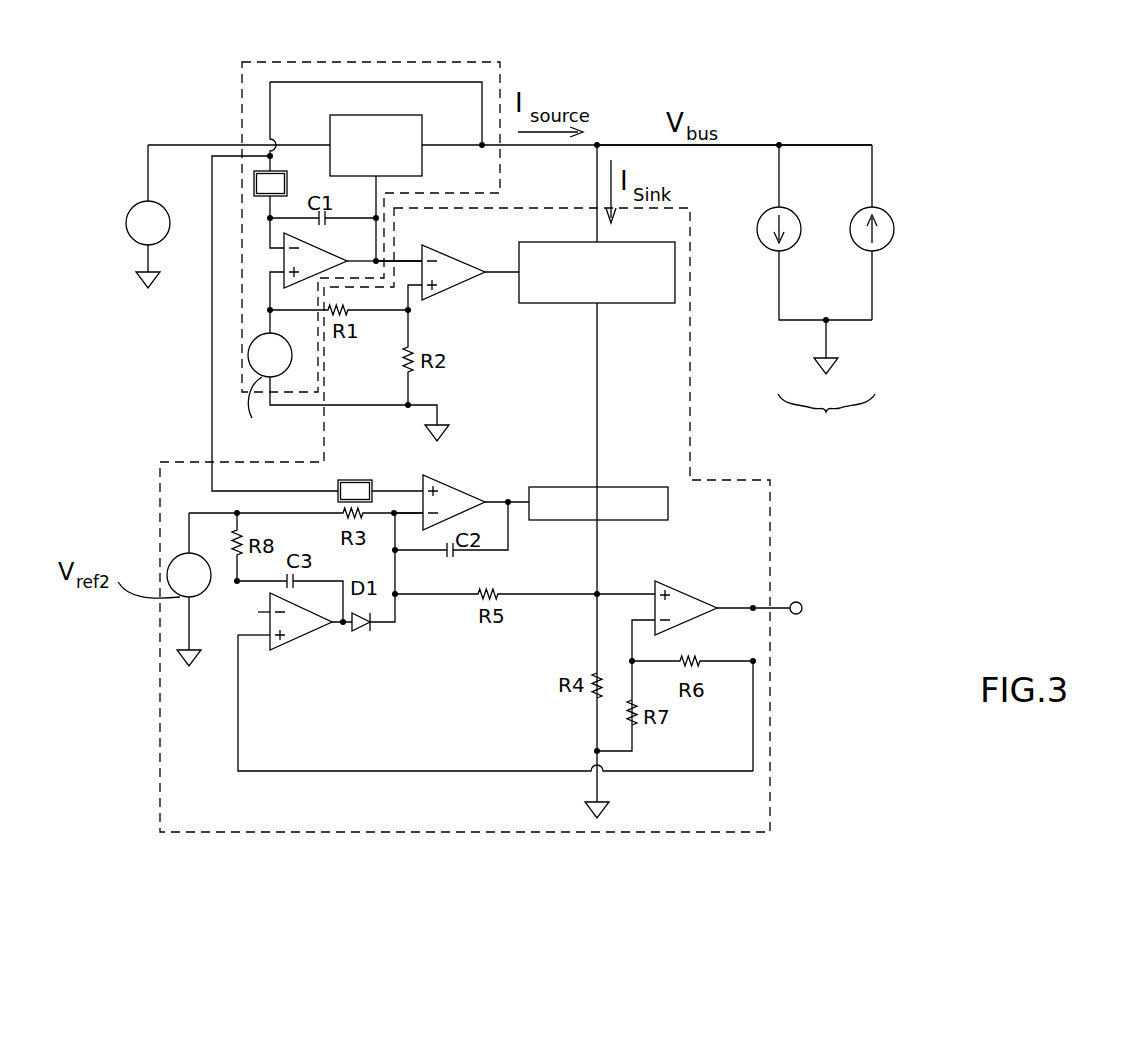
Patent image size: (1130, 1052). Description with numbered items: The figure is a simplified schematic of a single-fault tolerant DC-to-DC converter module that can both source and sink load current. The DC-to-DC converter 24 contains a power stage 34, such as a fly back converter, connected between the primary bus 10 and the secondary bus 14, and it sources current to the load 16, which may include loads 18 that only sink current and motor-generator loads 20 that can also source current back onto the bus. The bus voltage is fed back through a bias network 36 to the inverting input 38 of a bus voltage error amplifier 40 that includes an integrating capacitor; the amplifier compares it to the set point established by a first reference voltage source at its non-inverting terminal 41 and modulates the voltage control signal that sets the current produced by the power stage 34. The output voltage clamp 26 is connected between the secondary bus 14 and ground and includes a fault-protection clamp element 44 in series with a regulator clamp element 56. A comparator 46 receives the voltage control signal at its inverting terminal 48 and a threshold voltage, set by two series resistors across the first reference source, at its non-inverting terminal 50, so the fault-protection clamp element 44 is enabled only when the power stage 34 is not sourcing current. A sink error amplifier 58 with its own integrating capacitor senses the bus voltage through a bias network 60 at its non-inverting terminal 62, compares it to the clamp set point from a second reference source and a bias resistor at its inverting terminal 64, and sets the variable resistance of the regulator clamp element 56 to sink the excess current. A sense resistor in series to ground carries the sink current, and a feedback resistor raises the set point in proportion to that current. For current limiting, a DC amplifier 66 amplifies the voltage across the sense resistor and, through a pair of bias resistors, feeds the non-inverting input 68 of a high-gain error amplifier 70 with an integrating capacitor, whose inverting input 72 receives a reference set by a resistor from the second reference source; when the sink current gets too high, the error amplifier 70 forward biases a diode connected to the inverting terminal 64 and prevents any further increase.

The primary bus 10 is at (170, 145).
The secondary bus 14 is at (755, 146).
The load 16 is at (826, 380).
The loads 18 is at (763, 250).
The motor-generator loads 20 is at (892, 213).
The DC-to-DC converter 24 is at (304, 62).
The output voltage clamp 26 is at (182, 462).
The power stage 34 is at (376, 115).
The bias network 36 is at (288, 185).
The inverting input 38 is at (270, 235).
The bus voltage error amplifier 40 is at (318, 250).
The non-inverting terminal 41 is at (270, 282).
The fault-protection clamp element 44 is at (628, 303).
The comparator 46 is at (456, 256).
The inverting terminal 48 is at (424, 259).
The non-inverting terminal 50 is at (414, 295).
The regulator clamp element 56 is at (640, 520).
The sink error amplifier 58 is at (462, 490).
The bias network 60 is at (348, 480).
The non-inverting terminal 62 is at (420, 485).
The inverting terminal 64 is at (420, 513).
The DC amplifier 66 is at (690, 592).
The non-inverting input 68 is at (270, 650).
The error amplifier 70 is at (308, 638).
The inverting input 72 is at (258, 612).